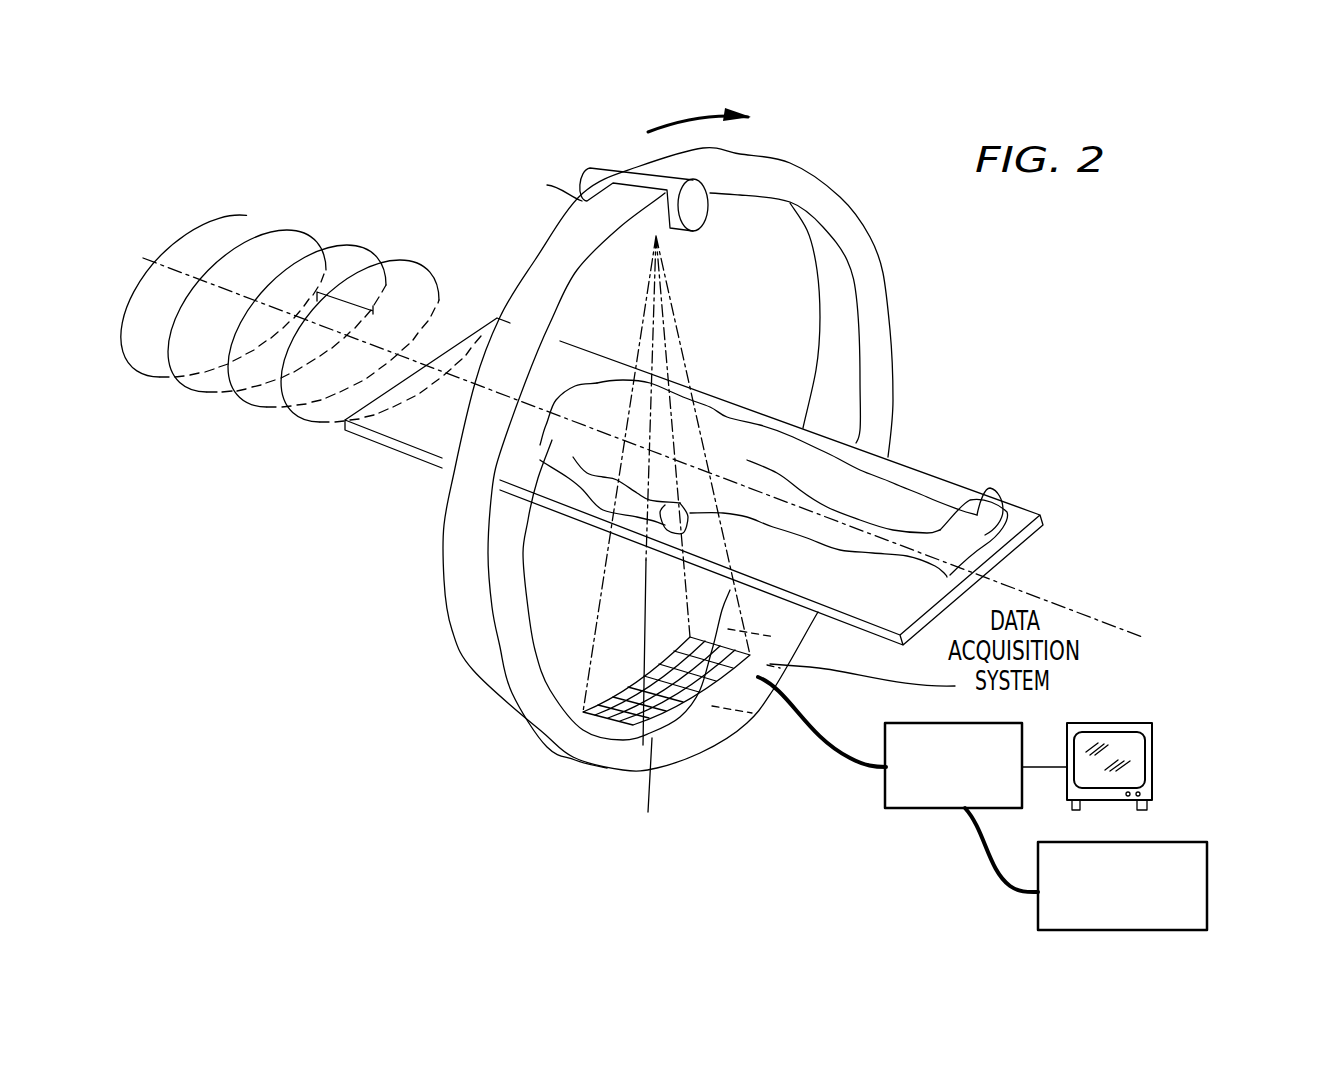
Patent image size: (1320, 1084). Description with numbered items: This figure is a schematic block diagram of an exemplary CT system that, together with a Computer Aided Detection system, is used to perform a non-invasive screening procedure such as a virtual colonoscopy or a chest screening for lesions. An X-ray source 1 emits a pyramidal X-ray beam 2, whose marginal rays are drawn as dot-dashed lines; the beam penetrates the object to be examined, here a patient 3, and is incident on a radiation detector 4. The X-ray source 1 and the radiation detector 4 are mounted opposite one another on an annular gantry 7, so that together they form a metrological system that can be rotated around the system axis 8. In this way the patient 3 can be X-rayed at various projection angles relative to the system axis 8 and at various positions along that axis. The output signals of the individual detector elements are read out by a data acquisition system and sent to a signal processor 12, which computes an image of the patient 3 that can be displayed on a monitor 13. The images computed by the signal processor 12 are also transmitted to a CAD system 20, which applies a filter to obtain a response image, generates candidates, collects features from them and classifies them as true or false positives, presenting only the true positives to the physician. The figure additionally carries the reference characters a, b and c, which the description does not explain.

The X-ray source 1 is at (584, 172).
The pyramidal X-ray beam 2 is at (618, 607).
The object to be examined (patient) 3 is at (903, 520).
The radiation detector 4 is at (683, 720).
The annular gantry 7 is at (893, 310).
The system axis 8 is at (1128, 616).
The signal processor 12 is at (935, 808).
The monitor 13 is at (1153, 750).
The CAD system 20 is at (1208, 875).
The rotation direction a is at (673, 120).
The helical pitch b is at (342, 291).
The helical scan path c is at (280, 232).